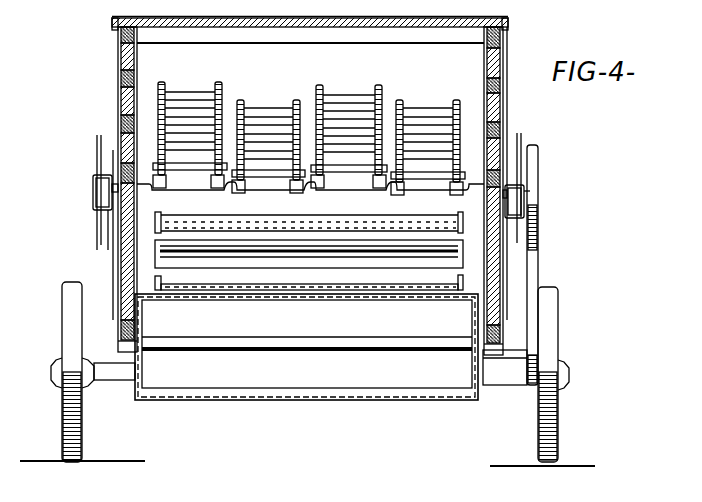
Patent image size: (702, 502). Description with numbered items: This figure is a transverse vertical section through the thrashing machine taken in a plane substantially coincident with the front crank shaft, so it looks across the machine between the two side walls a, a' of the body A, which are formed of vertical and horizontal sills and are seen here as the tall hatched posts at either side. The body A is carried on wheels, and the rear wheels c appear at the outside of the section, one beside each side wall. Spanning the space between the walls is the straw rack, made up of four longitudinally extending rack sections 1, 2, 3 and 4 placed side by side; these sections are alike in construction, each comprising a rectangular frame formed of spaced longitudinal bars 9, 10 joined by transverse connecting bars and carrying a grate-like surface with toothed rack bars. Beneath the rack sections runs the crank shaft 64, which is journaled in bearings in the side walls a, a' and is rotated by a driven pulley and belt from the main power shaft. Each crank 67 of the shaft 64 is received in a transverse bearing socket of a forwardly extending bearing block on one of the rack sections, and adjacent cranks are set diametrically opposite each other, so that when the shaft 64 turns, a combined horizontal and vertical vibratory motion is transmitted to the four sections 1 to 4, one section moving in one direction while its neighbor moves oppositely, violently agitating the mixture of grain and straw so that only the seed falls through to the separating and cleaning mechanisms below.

The body A is at (353, 23).
The side wall a is at (507, 191).
The side wall a' is at (110, 189).
The rack section 1 is at (201, 146).
The rack section 2 is at (277, 178).
The rack section 3 is at (350, 163).
The rack section 4 is at (425, 183).
The longitudinal bar 9 is at (158, 102).
The longitudinal bar 10 is at (225, 97).
The crank shaft 64 is at (152, 192).
The crank 67 is at (203, 182).
The rear wheels c is at (63, 311).